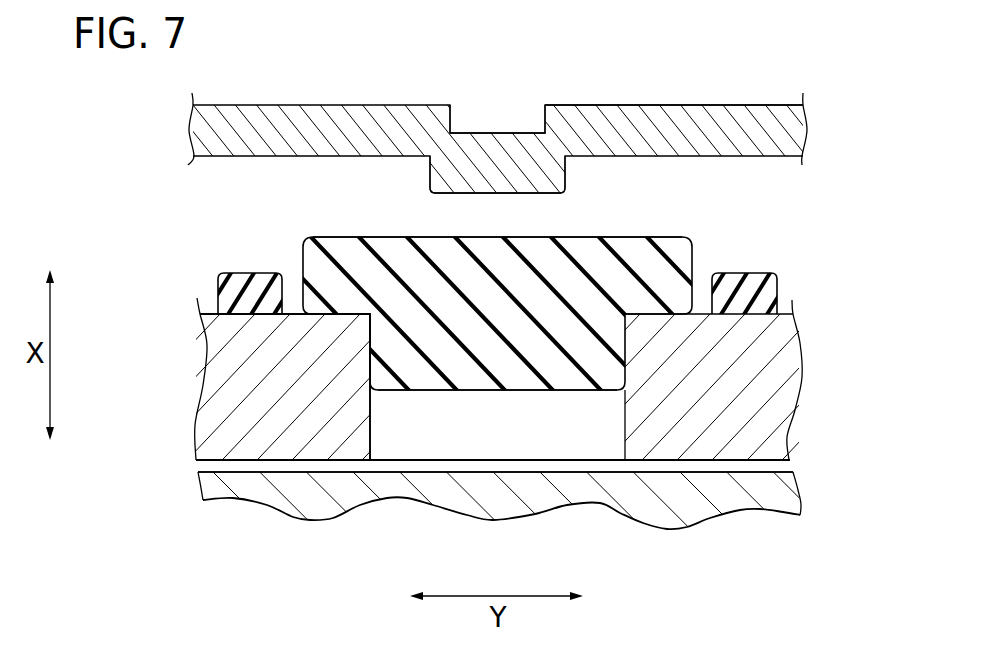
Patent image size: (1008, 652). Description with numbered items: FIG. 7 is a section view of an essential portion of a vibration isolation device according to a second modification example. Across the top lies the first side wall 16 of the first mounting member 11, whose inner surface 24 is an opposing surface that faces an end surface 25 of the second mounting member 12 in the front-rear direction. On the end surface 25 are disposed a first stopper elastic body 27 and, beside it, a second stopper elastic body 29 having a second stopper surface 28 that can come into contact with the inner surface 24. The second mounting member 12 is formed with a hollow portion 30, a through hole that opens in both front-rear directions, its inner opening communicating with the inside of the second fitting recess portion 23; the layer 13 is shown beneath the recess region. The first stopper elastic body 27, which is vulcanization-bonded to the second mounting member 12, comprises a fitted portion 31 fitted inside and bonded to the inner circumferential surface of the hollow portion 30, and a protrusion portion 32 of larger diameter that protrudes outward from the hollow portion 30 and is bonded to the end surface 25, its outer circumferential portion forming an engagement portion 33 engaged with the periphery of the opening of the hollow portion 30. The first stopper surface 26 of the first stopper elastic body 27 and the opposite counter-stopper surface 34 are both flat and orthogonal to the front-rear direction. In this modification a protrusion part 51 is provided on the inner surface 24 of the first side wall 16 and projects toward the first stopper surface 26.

The first mounting member 11 is at (780, 95).
The second mounting member 12 is at (815, 387).
The base layer 13 is at (813, 496).
The first side wall 16 is at (677, 105).
The second fitting recess portion 23 is at (765, 466).
The inner surface 24 is at (292, 157).
The end surface 25 is at (198, 296).
The first stopper surface 26 is at (388, 237).
The first stopper elastic body 27 is at (130, 333).
The second stopper surface 28 is at (747, 273).
The second stopper elastic body 29 is at (251, 262).
The hollow portion 30 is at (370, 423).
The fitted portion 31 is at (380, 369).
The protrusion portion 32 is at (323, 308).
The engagement portion 33 is at (674, 250).
The counter-stopper surface 34 is at (552, 390).
The protrusion part 51 is at (437, 180).